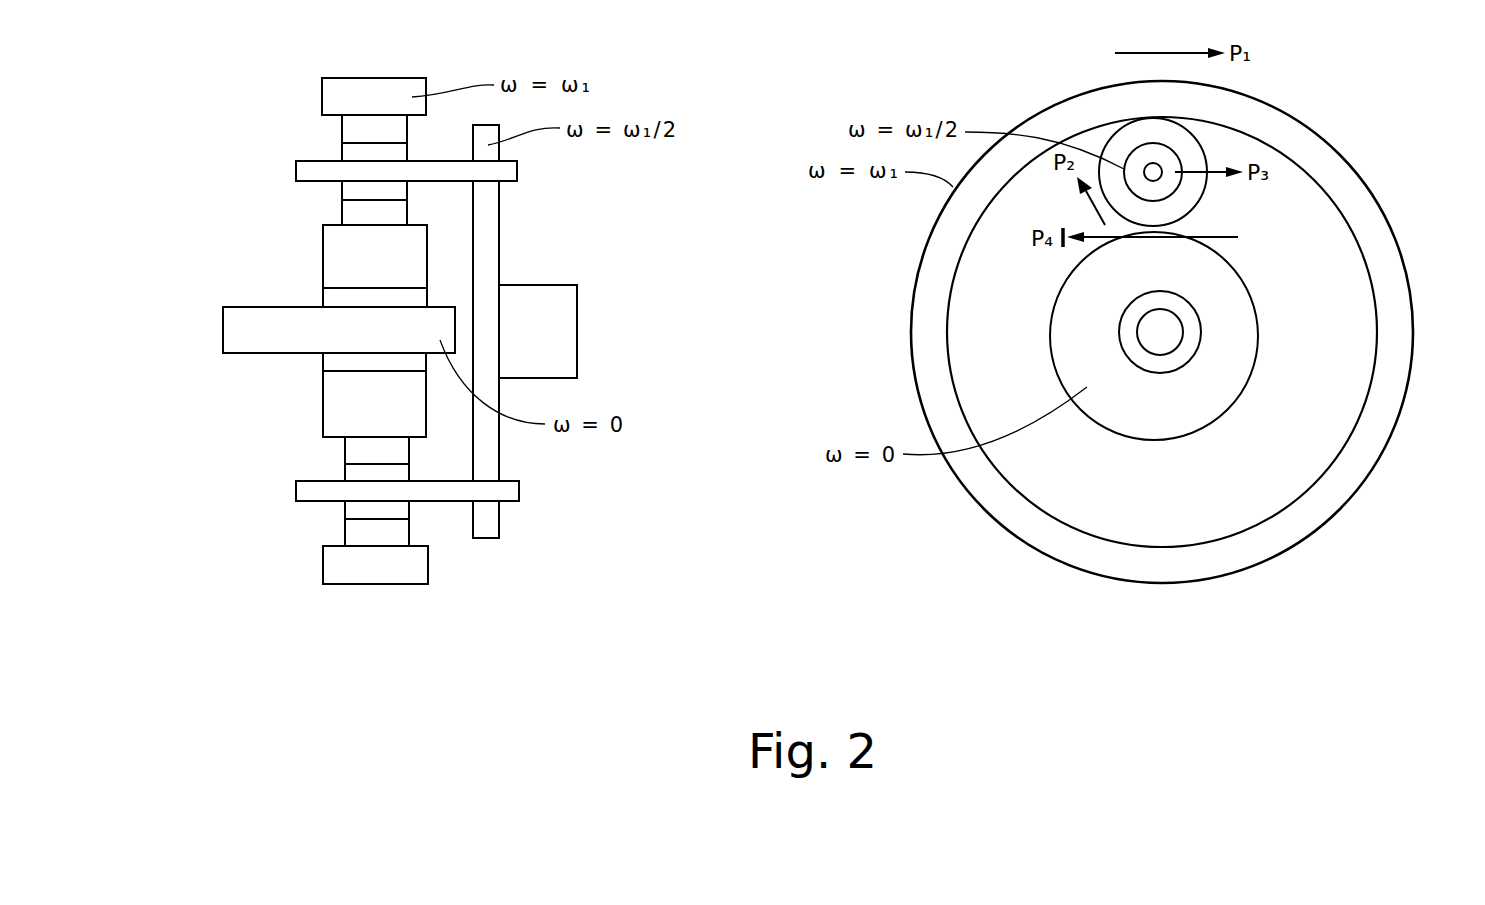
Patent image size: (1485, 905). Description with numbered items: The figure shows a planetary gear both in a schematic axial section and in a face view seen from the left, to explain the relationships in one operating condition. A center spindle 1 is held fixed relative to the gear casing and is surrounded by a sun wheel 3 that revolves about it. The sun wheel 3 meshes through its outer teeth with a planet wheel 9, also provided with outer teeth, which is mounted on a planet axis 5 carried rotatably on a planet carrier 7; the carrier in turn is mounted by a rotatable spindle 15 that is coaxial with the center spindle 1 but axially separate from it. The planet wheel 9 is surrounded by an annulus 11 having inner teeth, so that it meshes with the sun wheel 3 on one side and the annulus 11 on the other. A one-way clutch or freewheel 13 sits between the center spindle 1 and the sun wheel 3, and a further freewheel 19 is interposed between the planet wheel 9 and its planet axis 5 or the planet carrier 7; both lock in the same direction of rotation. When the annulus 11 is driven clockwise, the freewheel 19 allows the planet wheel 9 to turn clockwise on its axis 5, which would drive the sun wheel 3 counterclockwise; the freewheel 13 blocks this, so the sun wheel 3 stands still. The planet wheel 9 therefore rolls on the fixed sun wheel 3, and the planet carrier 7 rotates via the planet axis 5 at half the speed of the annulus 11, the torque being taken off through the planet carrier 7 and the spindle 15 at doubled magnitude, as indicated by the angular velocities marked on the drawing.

The center spindle 1 is at (238, 332).
The sun wheel 3 is at (370, 267).
The planet axis 5 is at (307, 172).
The planet carrier 7 is at (487, 218).
The planet wheel 9 is at (357, 127).
The annulus 11 is at (375, 88).
The freewheel 13 is at (338, 363).
The spindle 15 is at (557, 333).
The freewheel 19 is at (353, 188).